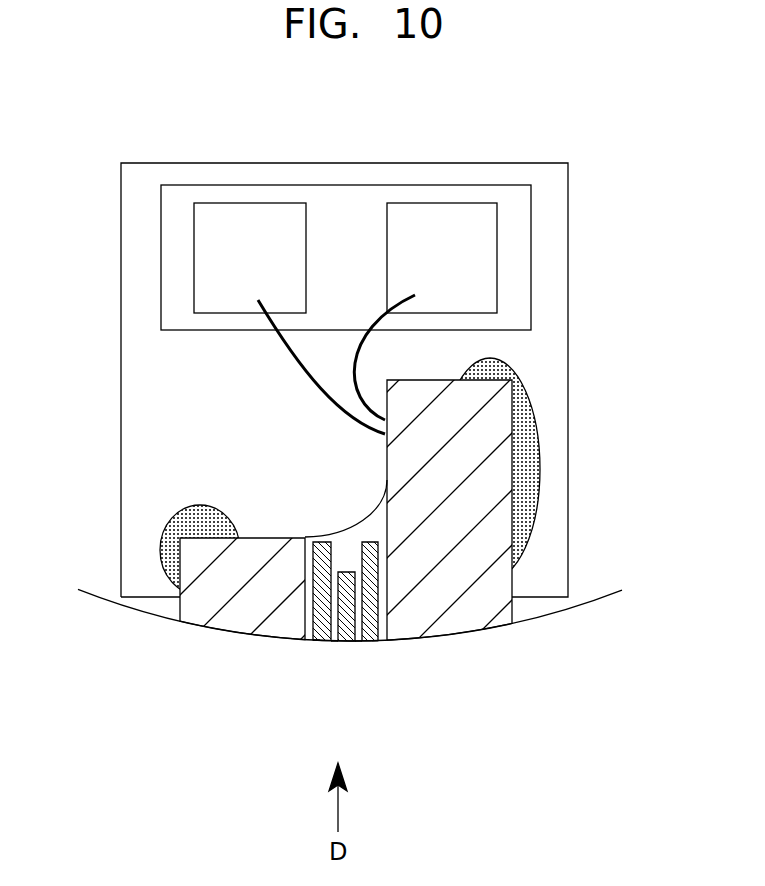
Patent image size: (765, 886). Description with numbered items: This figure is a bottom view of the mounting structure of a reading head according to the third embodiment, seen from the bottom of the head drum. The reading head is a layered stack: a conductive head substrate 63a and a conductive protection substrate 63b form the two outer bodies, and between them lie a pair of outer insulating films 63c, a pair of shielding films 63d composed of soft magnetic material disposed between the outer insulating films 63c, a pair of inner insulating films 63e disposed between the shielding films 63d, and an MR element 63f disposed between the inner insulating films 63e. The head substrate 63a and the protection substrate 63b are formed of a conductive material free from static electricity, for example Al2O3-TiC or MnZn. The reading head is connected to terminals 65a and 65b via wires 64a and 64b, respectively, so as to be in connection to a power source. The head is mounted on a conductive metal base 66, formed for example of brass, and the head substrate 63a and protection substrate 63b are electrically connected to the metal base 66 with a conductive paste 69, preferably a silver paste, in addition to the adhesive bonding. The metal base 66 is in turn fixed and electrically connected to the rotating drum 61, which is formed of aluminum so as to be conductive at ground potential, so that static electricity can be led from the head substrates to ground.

The metal base 66 is at (543, 163).
The terminal 65a is at (241, 203).
The terminal 65b is at (446, 203).
The wire 64a is at (300, 376).
The wire 64b is at (362, 347).
The conductive paste 69 is at (163, 533).
The head substrate 63a is at (452, 643).
The protection substrate 63b is at (193, 610).
The outer insulating films 63c is at (309, 644).
The shielding films 63d is at (320, 645).
The inner insulating films 63e is at (332, 645).
The MR element 63f is at (337, 645).
The rotating drum 61 is at (100, 601).